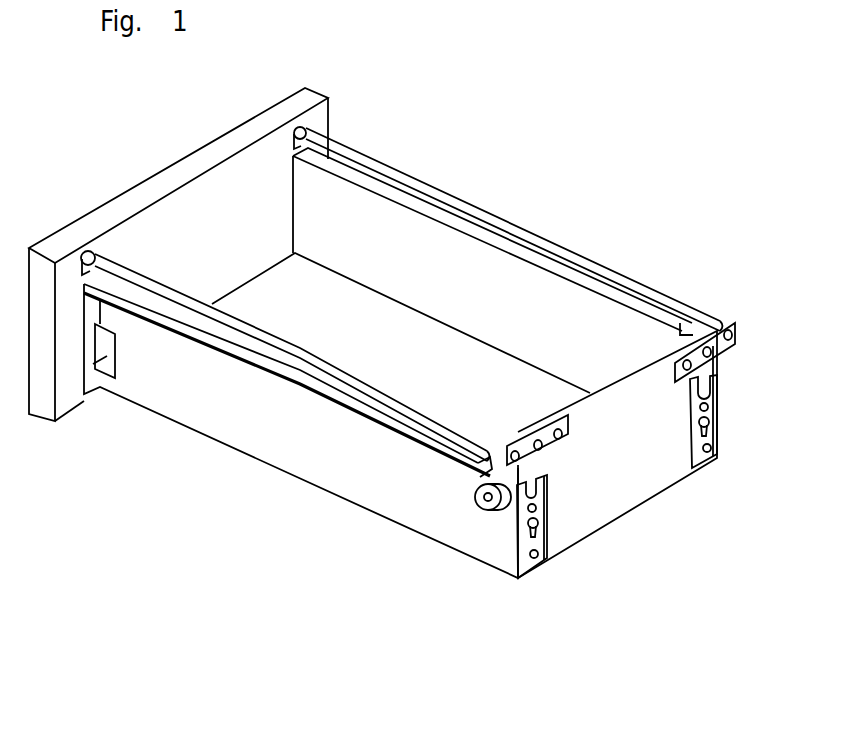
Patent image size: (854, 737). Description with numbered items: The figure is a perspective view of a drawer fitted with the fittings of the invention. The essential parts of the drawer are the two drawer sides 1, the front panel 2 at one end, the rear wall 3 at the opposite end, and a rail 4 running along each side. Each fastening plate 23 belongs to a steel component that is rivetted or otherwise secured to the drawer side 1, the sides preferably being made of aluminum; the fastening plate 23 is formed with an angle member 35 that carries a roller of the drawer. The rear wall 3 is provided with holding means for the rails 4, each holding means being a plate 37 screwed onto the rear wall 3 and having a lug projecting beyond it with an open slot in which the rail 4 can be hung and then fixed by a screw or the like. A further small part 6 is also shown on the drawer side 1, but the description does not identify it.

The drawer side 1 is at (388, 367).
The front panel 2 is at (178, 254).
The rear wall 3 is at (617, 460).
The rail 4 is at (402, 326).
The stop block 6 is at (95, 396).
The fastening plate 23 is at (698, 453).
The angle member 35 is at (493, 566).
The plate 37 is at (570, 417).